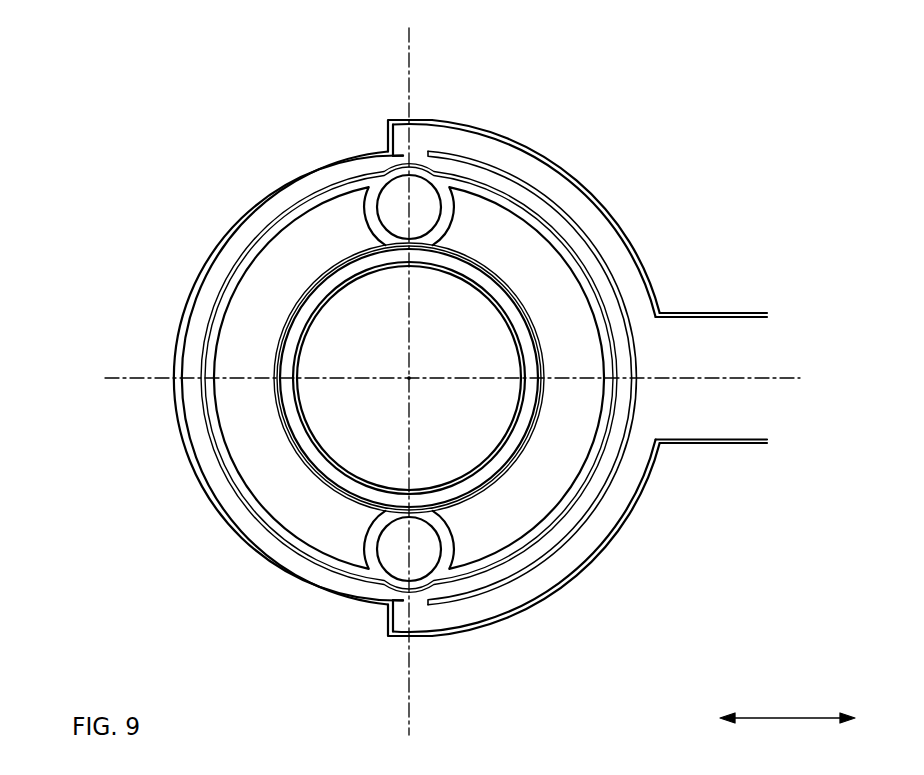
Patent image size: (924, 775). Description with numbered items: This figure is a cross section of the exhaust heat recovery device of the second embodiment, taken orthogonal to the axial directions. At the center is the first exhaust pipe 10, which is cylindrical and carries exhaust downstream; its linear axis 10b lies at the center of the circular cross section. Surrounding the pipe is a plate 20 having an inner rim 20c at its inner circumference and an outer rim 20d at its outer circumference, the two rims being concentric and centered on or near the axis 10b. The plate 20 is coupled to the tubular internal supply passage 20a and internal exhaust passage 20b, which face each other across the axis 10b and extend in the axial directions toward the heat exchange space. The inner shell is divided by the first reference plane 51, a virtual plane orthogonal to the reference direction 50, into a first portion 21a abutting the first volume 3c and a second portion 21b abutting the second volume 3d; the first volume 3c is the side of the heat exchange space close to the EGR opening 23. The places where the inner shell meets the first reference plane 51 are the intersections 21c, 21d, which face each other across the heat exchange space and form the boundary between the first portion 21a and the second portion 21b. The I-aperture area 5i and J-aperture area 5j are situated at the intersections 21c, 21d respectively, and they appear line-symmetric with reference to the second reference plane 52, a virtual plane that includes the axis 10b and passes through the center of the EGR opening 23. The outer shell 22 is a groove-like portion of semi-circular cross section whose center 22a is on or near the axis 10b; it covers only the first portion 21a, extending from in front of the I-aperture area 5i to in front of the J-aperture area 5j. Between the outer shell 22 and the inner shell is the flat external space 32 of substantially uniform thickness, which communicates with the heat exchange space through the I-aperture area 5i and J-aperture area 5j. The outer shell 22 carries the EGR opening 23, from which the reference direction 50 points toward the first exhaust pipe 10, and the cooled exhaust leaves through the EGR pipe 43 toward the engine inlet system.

The first volume 3c is at (502, 182).
The second volume 3d is at (216, 276).
The I-aperture area 5i is at (388, 126).
The J-aperture area 5j is at (418, 638).
The first exhaust pipe 10 is at (480, 288).
The axis 10b is at (409, 378).
The plate 20 is at (290, 206).
The internal supply passage 20a is at (428, 221).
The internal exhaust passage 20b is at (428, 563).
The inner rim 20c is at (323, 282).
The outer rim 20d is at (246, 250).
The first portion 21a is at (527, 575).
The second portion 21b is at (251, 540).
The intersection 21c is at (403, 152).
The intersection 21d is at (387, 604).
The outer shell 22 is at (622, 227).
The center 22a is at (409, 378).
The EGR opening 23 is at (665, 403).
The external space 32 is at (603, 522).
The EGR pipe 43 is at (703, 447).
The reference direction 50 is at (800, 718).
The first reference plane 51 is at (409, 689).
The second reference plane 52 is at (140, 378).